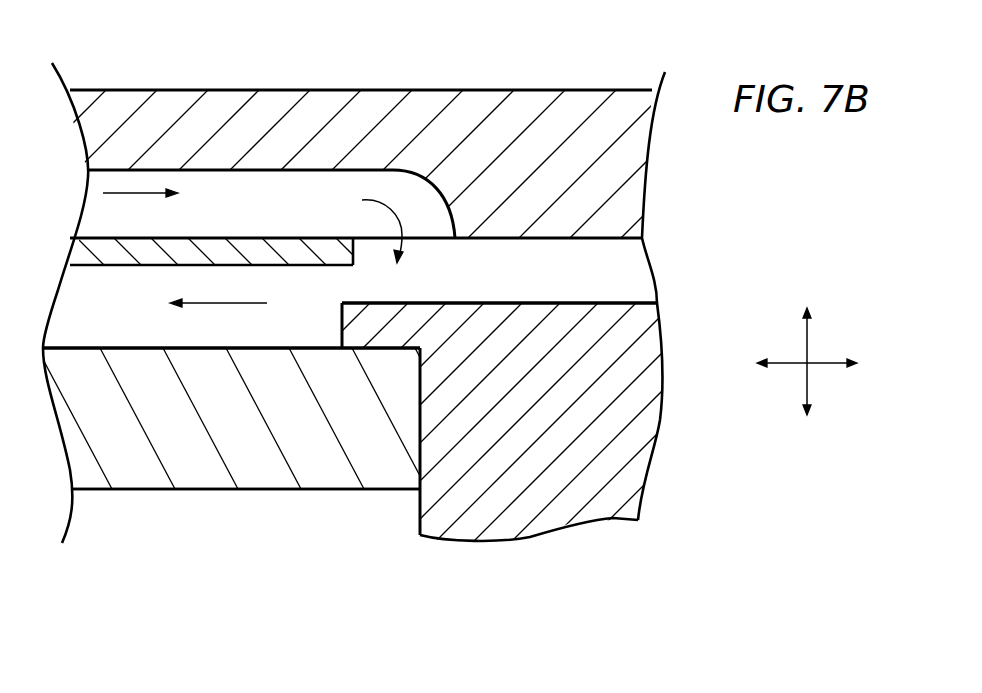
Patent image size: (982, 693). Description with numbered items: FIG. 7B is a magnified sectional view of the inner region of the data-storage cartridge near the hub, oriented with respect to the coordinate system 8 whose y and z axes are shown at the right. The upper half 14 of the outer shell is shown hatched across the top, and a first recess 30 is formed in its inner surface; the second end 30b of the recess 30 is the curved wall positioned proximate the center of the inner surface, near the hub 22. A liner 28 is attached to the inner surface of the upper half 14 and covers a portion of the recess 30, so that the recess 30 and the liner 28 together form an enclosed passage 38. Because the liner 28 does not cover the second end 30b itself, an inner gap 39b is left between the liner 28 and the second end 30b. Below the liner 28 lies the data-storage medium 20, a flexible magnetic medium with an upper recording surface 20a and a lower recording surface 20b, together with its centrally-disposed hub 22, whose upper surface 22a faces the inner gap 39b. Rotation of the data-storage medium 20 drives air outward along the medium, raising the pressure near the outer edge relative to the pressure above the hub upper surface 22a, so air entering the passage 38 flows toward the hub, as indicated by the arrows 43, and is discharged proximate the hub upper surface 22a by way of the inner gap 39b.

The coordinate system 8 is at (807, 363).
The upper half 14 is at (553, 107).
The data-storage medium 20 is at (289, 440).
The upper recording surface 20a is at (65, 347).
The lower recording surface 20b is at (307, 490).
The hub 22 is at (532, 427).
The upper surface 22a is at (577, 302).
The liner 28 is at (262, 253).
The first recess 30 is at (336, 172).
The second end 30b is at (443, 197).
The enclosed passage 38 is at (267, 214).
The inner gap 39b is at (443, 242).
The arrows 43 is at (383, 202).